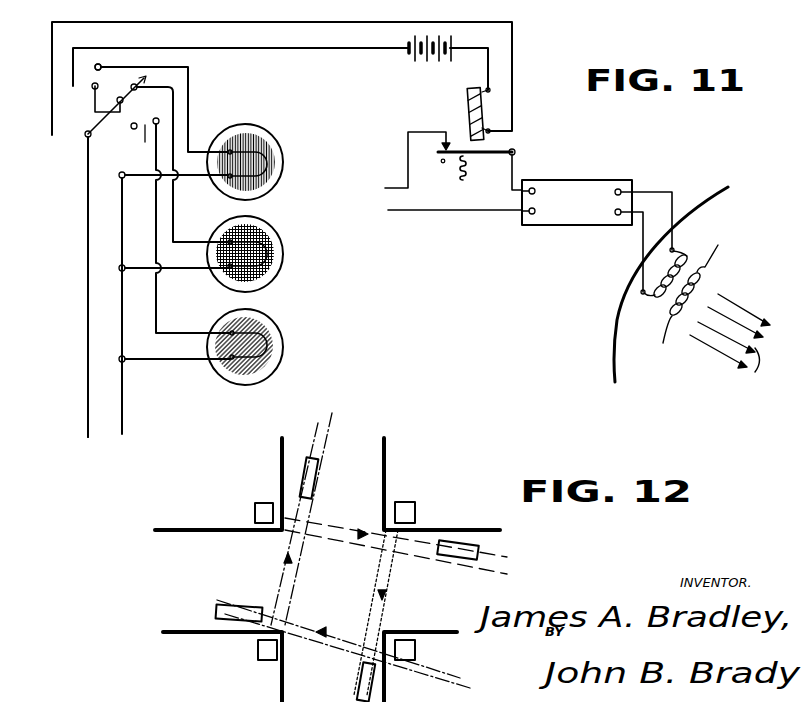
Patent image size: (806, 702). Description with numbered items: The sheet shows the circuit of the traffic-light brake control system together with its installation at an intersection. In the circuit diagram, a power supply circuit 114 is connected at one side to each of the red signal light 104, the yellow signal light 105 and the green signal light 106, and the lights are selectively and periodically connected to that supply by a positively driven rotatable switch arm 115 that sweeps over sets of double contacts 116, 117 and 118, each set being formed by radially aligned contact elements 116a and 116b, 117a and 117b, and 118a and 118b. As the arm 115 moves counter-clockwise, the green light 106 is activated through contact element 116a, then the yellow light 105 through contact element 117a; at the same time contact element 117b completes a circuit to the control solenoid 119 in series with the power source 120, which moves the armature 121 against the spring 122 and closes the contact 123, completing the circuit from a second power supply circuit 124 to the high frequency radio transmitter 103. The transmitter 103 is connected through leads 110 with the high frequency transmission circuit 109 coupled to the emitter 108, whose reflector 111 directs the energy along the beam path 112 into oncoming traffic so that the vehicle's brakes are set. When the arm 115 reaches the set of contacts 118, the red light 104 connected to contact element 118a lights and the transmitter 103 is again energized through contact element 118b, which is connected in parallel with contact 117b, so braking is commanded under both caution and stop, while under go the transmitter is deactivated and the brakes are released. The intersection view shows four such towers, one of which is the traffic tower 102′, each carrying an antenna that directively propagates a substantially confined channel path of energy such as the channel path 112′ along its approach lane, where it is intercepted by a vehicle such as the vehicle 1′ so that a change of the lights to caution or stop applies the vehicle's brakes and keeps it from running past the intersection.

In FIG. 11, the high frequency radio transmitter 103 is at (556, 182).
In FIG. 11, the red signal light 104 is at (283, 141).
In FIG. 11, the yellow signal light 105 is at (274, 238).
In FIG. 11, the green signal light 106 is at (275, 332).
In FIG. 11, the high frequency energy emitter 108 is at (707, 280).
In FIG. 11, the high frequency transmission circuit 109 is at (682, 252).
In FIG. 11, the leads 110 is at (645, 198).
In FIG. 11, the reflector 111 is at (711, 189).
In FIG. 11, the beam path 112 is at (730, 350).
In FIG. 11, the power supply circuit 114 is at (100, 405).
In FIG. 11, the rotatable switch arm 115 is at (128, 131).
In FIG. 11, the set of double contacts 116 is at (120, 180).
In FIG. 11, the contact element 116a is at (159, 120).
In FIG. 11, the contact element 116b is at (145, 135).
In FIG. 11, the set of double contacts 117 is at (140, 90).
In FIG. 11, the contact element 117a is at (123, 97).
In FIG. 11, the contact element 117b is at (135, 128).
In FIG. 11, the set of double contacts 118 is at (99, 63).
In FIG. 11, the contact element 118a is at (104, 60).
In FIG. 11, the contact element 118b is at (92, 88).
In FIG. 11, the control solenoid 119 is at (490, 110).
In FIG. 11, the power source 120 is at (430, 62).
In FIG. 11, the armature 121 is at (490, 146).
In FIG. 11, the spring 122 is at (457, 174).
In FIG. 11, the contact 123 is at (437, 142).
In FIG. 11, the power supply circuit 124 is at (393, 195).
In FIG. 12, the vehicle 1′ is at (360, 680).
In FIG. 12, the traffic tower 102′ is at (407, 506).
In FIG. 12, the channel path 112′ is at (395, 574).